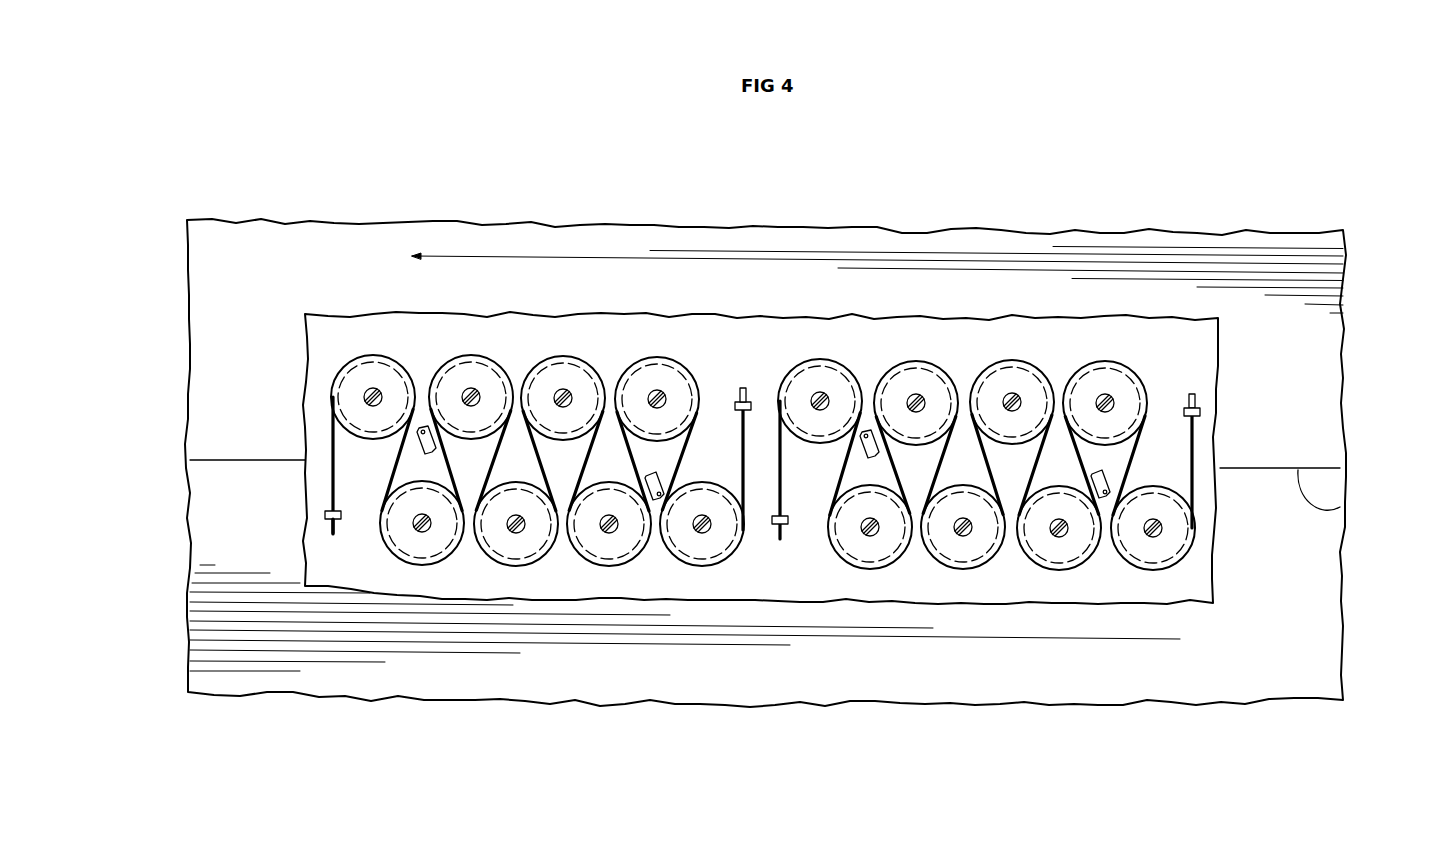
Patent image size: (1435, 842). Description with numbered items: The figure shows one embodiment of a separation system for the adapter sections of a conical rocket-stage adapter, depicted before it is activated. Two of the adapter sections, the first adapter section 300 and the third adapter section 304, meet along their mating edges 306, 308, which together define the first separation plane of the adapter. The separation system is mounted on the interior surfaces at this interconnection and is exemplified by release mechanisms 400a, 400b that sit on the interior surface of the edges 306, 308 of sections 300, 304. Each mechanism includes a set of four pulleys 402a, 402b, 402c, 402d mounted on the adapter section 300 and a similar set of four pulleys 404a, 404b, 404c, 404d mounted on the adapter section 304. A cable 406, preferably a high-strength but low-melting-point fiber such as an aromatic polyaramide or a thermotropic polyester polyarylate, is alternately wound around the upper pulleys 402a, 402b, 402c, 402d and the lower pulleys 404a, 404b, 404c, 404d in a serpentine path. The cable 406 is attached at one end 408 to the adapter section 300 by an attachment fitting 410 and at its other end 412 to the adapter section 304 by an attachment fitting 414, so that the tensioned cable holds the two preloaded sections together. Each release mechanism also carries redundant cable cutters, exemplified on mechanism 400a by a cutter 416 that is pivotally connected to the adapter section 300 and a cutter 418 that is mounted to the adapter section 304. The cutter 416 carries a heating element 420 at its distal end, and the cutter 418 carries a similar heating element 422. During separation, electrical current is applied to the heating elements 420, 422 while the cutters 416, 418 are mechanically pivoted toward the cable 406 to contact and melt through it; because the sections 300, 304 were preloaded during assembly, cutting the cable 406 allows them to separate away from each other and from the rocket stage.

The first adapter section 300 is at (258, 216).
The third adapter section 304 is at (258, 695).
The mating edge 306 is at (1340, 507).
The mating edge 308 is at (230, 460).
The release mechanism 400a is at (434, 127).
The release mechanism 400b is at (1027, 146).
The pulley 402a is at (371, 355).
The pulley 402b is at (471, 355).
The pulley 402c is at (563, 356).
The pulley 402d is at (657, 357).
The pulley 404a is at (422, 567).
The pulley 404b is at (510, 567).
The pulley 404c is at (598, 567).
The pulley 404d is at (706, 567).
The cable 406 is at (330, 487).
The cable end 408 is at (739, 392).
The attachment fitting 410 is at (753, 406).
The cable end 412 is at (331, 524).
The attachment fitting 414 is at (325, 514).
The cable cutter 416 is at (424, 428).
The cable cutter 418 is at (657, 500).
The heating element 420 is at (425, 454).
The heating element 422 is at (659, 471).